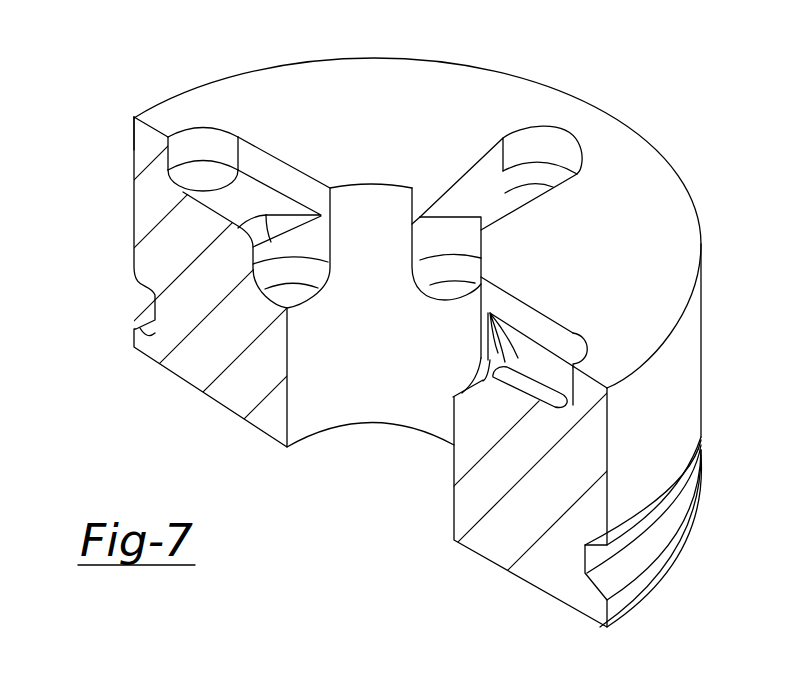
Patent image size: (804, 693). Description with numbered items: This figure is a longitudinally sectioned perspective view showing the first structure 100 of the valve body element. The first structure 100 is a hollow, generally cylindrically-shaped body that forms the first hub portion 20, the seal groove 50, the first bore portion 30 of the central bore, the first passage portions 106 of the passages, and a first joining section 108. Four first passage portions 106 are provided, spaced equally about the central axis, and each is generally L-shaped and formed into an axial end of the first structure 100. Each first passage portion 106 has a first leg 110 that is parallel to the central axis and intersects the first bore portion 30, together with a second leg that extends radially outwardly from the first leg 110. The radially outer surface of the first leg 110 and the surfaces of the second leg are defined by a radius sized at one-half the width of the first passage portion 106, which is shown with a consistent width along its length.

The first hub portion 20 is at (512, 535).
The first bore portion 30 is at (413, 396).
The seal groove 50 is at (612, 568).
The first structure 100 is at (205, 357).
The first passage portion 106 is at (540, 160).
The first joining section 108 is at (134, 150).
The first leg 110 is at (473, 278).